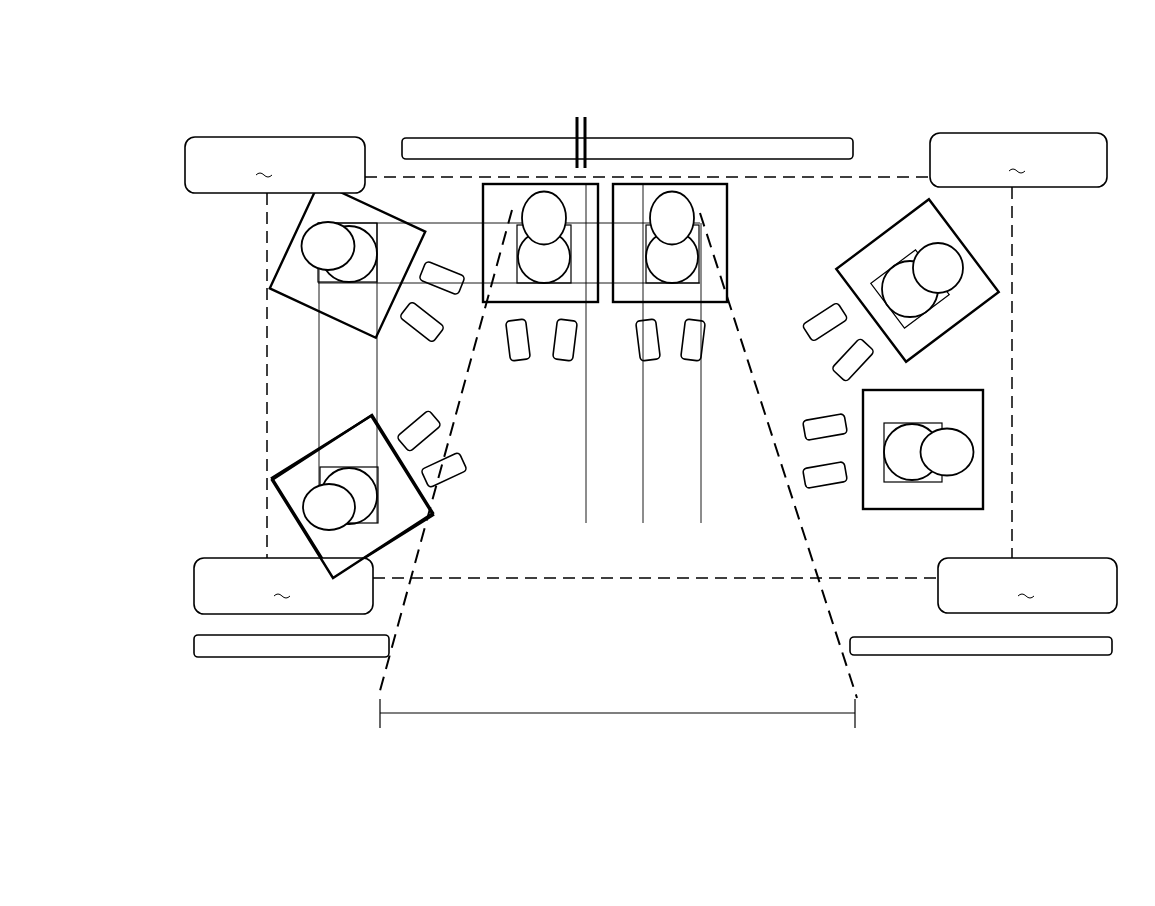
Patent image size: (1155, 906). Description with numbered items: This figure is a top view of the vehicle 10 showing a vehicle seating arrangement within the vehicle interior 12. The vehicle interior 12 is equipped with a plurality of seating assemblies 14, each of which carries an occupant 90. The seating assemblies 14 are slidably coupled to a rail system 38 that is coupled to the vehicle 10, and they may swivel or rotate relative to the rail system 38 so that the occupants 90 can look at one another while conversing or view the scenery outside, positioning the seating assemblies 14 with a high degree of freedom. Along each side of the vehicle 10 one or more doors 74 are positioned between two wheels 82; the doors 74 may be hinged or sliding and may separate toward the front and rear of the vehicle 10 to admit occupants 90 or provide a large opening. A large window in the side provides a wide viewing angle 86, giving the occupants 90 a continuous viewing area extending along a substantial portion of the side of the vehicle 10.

The vehicle 10 is at (192, 120).
The vehicle interior 12 is at (983, 208).
The seating assembly 14 is at (387, 207).
The rail system 38 is at (377, 377).
The door 74 is at (832, 148).
The wheel 82 is at (651, 373).
The viewing angle 86 is at (640, 714).
The occupant 90 is at (548, 215).